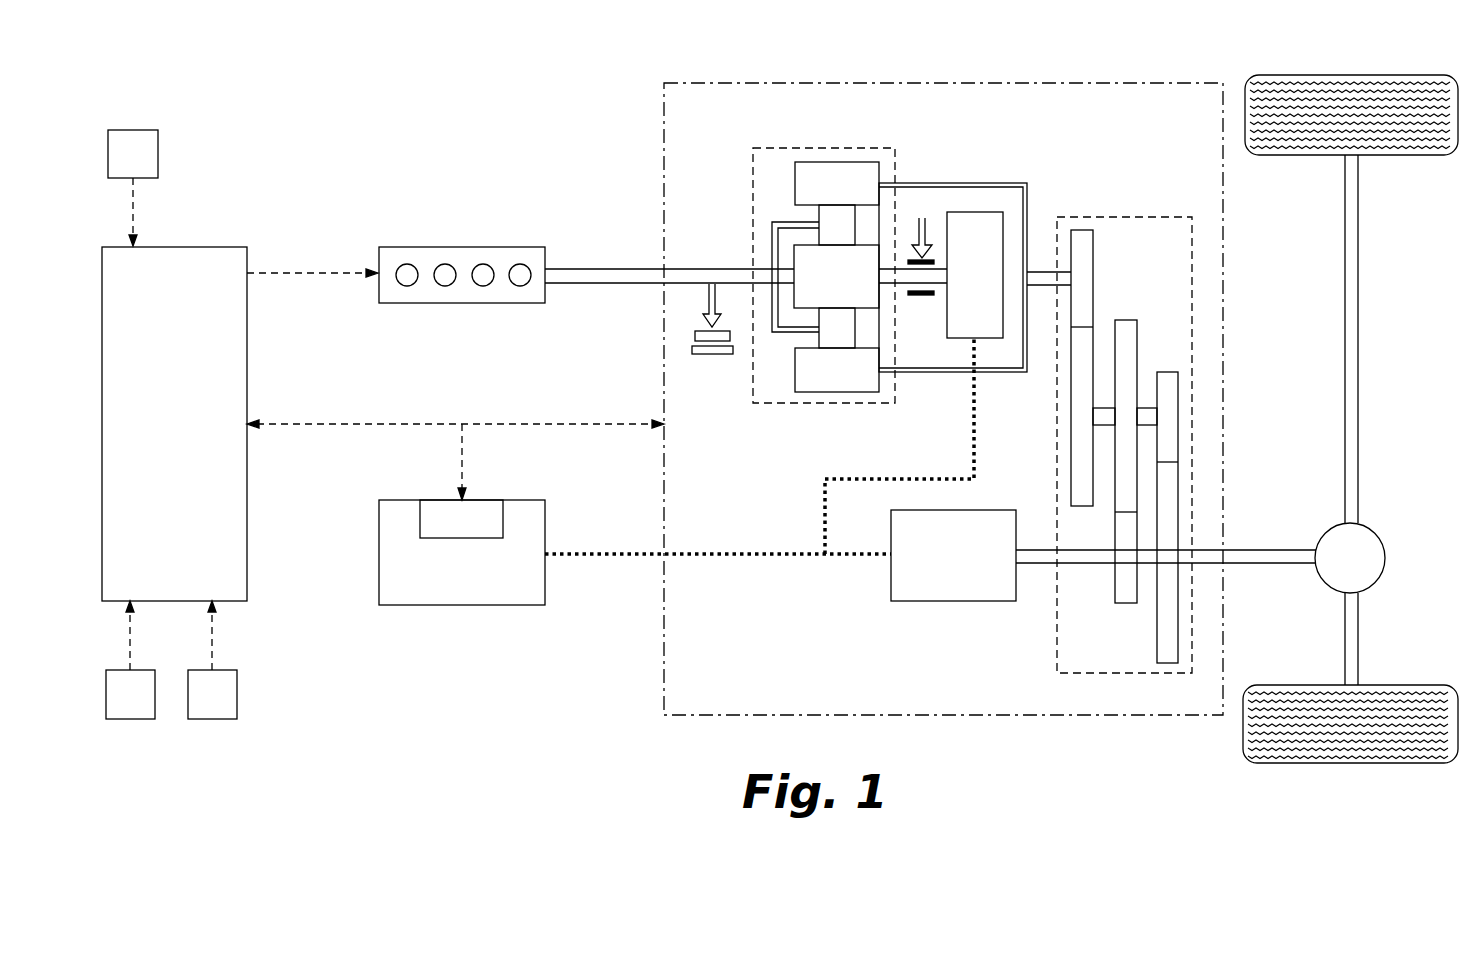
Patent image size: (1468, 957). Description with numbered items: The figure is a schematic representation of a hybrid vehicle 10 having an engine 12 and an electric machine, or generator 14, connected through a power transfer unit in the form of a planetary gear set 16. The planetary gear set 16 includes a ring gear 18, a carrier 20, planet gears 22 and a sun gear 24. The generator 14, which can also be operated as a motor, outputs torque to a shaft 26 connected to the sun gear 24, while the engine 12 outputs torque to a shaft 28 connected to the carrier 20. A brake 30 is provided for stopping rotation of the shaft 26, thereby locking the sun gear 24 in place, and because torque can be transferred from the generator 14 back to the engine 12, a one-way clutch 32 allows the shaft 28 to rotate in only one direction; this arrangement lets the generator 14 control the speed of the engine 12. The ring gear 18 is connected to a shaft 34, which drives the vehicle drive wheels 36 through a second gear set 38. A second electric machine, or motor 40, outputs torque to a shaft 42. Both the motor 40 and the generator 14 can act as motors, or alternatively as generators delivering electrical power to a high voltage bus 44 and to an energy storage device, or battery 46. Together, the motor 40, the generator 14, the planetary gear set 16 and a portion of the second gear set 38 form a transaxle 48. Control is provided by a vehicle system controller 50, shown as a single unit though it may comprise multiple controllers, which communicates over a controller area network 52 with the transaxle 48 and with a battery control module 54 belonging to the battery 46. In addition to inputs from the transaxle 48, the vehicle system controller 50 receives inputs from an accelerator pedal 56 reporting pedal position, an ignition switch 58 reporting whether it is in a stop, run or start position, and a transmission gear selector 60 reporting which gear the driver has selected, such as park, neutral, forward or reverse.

The vehicle 10 is at (1193, 58).
The engine 12 is at (520, 247).
The generator 14 is at (988, 212).
The planetary gear set 16 is at (826, 148).
The ring gear 18 is at (795, 183).
The carrier 20 is at (772, 235).
The planet gears 22 is at (819, 217).
The sun gear 24 is at (880, 303).
The shaft 26 is at (905, 292).
The shaft 28 is at (633, 283).
The brake 30 is at (935, 257).
The one-way clutch 32 is at (690, 339).
The shaft 34 is at (1047, 272).
The vehicle drive wheels 36 is at (1392, 160).
The second gear set 38 is at (1132, 676).
The motor 40 is at (957, 601).
The shaft 42 is at (1040, 550).
The high voltage bus 44 is at (760, 554).
The battery 46 is at (375, 542).
The transaxle 48 is at (663, 128).
The vehicle system controller 50 is at (192, 247).
The controller area network 52 is at (395, 424).
The battery control module 54 is at (487, 500).
The accelerator pedal 56 is at (143, 130).
The ignition switch 58 is at (130, 719).
The transmission gear selector 60 is at (212, 719).